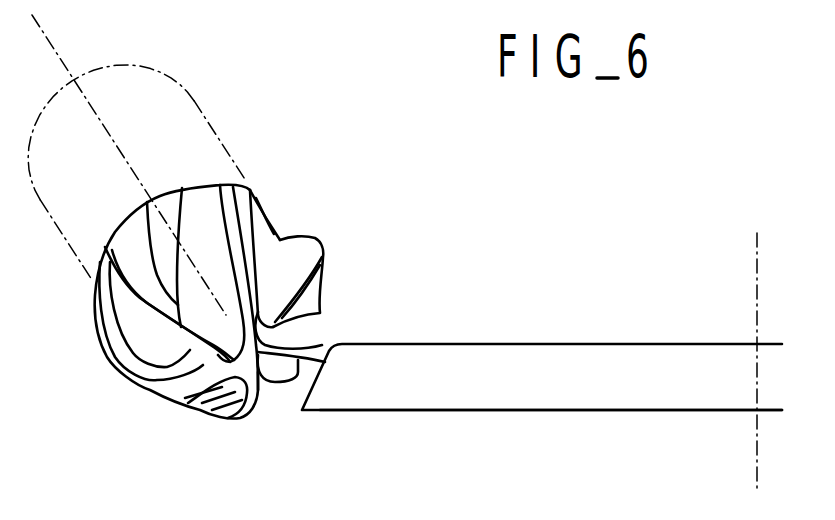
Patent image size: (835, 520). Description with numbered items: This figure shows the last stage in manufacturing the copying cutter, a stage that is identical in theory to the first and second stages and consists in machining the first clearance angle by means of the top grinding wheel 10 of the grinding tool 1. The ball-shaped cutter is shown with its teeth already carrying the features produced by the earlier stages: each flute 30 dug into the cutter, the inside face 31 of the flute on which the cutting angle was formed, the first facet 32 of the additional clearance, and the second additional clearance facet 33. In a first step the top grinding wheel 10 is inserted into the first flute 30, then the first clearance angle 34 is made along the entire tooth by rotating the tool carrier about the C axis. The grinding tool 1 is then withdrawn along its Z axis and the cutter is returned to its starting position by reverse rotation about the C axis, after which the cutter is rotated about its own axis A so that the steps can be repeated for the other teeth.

The grinding tool 1 is at (520, 327).
The top grinding wheel 10 is at (403, 390).
The flute 30 is at (270, 250).
The inside face 31 is at (305, 253).
The first facet 32 is at (325, 268).
The second additional clearance facet 33 is at (313, 303).
The first clearance angle 34 is at (323, 363).